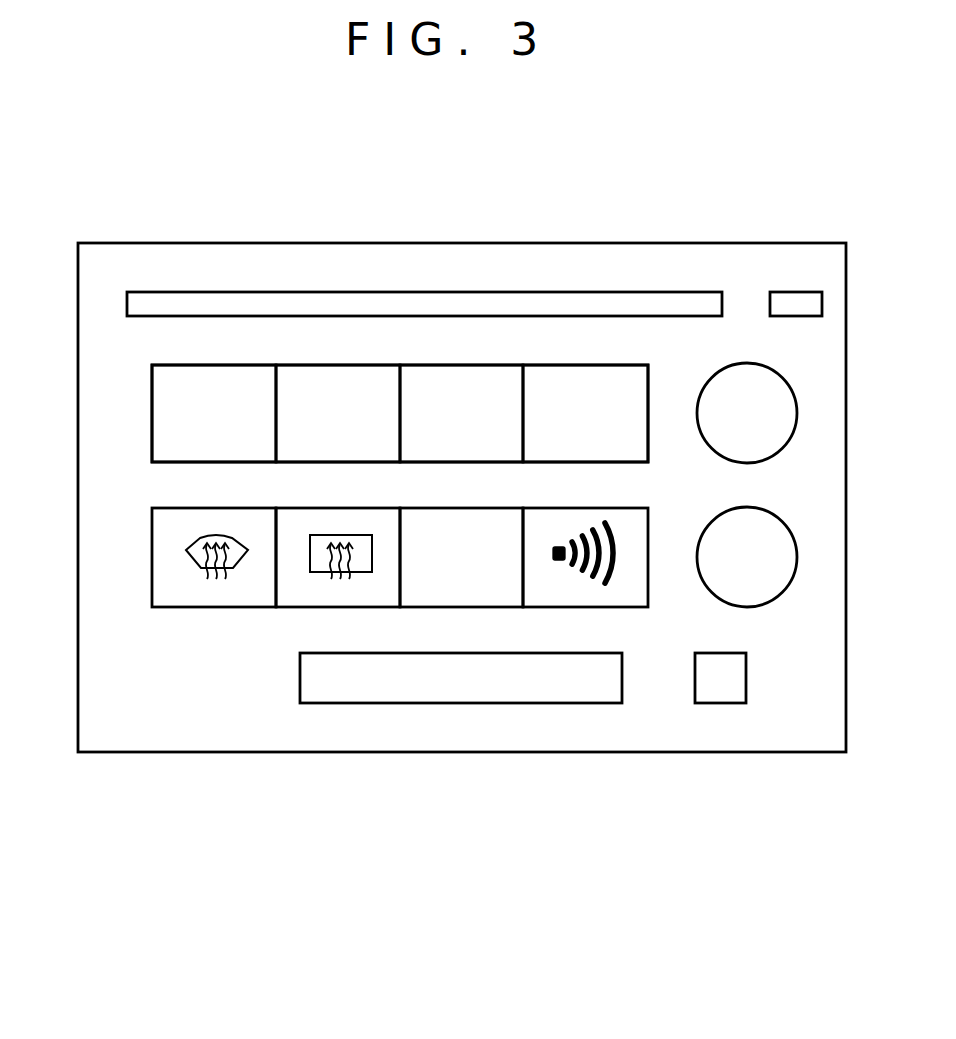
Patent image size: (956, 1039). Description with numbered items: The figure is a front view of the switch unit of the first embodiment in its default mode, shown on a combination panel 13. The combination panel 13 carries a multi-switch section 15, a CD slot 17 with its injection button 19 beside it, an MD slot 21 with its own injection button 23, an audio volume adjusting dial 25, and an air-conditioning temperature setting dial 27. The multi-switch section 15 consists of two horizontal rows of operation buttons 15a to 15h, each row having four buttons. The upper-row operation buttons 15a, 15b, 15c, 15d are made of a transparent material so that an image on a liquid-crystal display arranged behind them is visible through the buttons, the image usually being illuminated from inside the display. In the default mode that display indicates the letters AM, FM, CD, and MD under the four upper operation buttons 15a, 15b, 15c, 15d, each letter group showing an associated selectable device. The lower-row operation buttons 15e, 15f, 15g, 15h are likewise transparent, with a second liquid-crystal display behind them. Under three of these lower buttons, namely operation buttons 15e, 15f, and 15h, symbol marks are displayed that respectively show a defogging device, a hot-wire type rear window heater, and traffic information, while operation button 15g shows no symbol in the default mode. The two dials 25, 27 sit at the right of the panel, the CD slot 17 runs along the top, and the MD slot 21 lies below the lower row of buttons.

The combination panel 13 is at (769, 647).
The multi-switch section 15 is at (434, 352).
The operation button 15a is at (189, 380).
The operation button 15b is at (323, 385).
The operation button 15c is at (415, 383).
The operation button 15d is at (543, 385).
The operation button 15e is at (190, 587).
The operation button 15f is at (307, 583).
The operation button 15g is at (425, 588).
The operation button 15h is at (588, 587).
The CD slot 17 is at (514, 305).
The injection button 19 is at (793, 306).
The MD slot 21 is at (488, 690).
The injection button 23 is at (722, 685).
The audio volume adjusting dial 25 is at (718, 398).
The air-conditioning temperature setting dial 27 is at (768, 575).